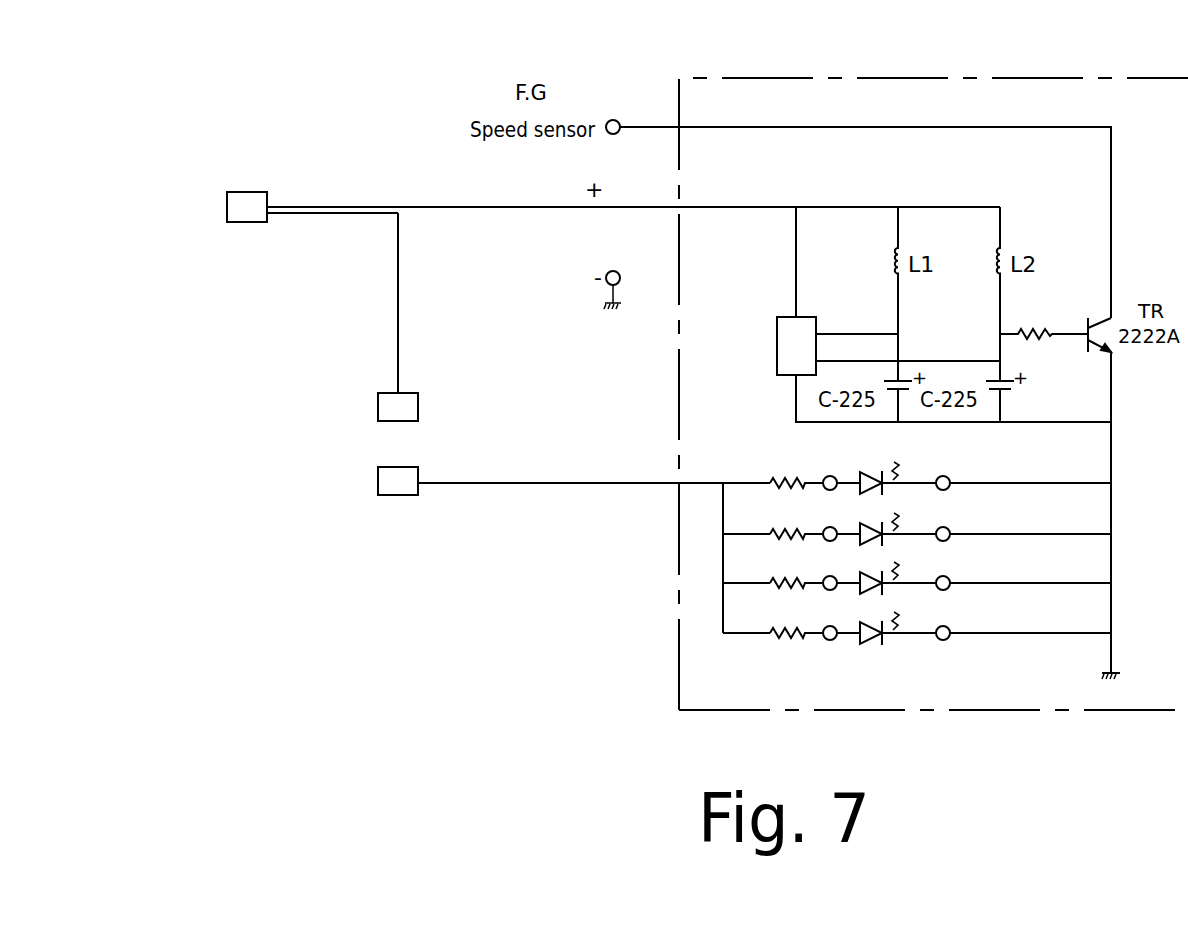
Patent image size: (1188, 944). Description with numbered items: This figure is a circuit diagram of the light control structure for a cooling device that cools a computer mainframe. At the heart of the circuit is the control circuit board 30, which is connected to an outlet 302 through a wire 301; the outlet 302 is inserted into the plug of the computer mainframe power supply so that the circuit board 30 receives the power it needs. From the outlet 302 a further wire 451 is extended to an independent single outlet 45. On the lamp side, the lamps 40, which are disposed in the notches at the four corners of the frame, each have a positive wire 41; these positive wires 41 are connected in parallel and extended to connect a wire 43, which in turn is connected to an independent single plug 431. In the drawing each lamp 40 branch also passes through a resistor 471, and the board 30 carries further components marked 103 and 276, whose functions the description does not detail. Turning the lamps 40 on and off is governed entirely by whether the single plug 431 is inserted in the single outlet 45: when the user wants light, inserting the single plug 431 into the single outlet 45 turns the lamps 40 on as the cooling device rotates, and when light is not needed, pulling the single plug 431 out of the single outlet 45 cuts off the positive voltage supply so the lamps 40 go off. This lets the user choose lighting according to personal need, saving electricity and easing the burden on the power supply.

The control circuit board 30 is at (828, 83).
The wire 301 is at (310, 206).
The outlet 302 is at (248, 202).
The single outlet 45 is at (388, 407).
The wire 451 is at (397, 323).
The wire 43 is at (650, 483).
The single plug 431 is at (408, 483).
The positive wires 41 is at (745, 534).
The lamps 40 is at (870, 482).
The resistor 471 is at (796, 544).
The resistor 103 is at (1044, 347).
The integrated circuit 276 is at (796, 346).